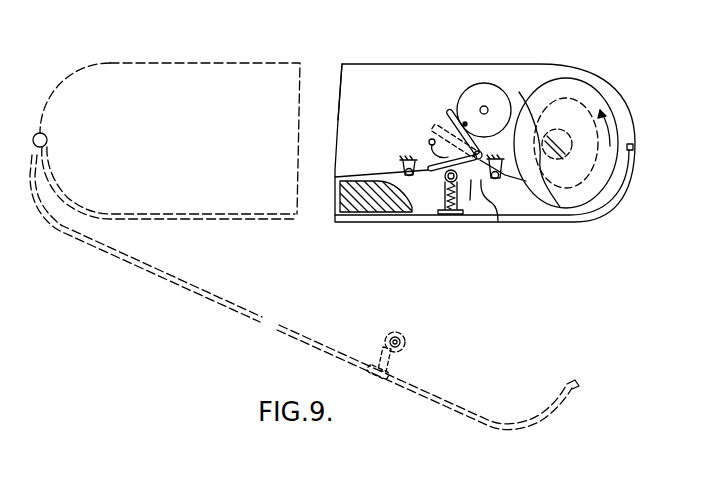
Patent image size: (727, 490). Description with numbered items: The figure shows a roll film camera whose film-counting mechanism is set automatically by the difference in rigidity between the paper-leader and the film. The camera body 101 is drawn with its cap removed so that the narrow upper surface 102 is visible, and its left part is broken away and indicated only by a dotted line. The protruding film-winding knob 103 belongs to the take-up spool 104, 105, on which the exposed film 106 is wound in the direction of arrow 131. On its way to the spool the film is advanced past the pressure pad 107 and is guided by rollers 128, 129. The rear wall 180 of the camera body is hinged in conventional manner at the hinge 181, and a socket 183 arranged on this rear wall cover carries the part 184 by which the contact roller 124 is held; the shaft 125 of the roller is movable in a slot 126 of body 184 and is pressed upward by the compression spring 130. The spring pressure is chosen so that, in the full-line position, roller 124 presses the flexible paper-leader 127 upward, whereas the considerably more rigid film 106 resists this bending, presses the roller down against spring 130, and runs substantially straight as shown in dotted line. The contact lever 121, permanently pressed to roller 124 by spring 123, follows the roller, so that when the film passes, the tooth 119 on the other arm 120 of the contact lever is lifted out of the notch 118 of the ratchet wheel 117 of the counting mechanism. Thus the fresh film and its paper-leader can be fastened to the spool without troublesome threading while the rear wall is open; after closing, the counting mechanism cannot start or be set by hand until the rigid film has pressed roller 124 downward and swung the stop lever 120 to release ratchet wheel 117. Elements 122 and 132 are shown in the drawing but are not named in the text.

The camera body 101 is at (437, 67).
The narrow upper surface 102 is at (372, 75).
The film-winding knob 103 is at (572, 92).
The spool 104 is at (547, 181).
The spool 105 is at (572, 117).
The exposed film 106 is at (471, 182).
The pressure pad 107 is at (345, 203).
The ratchet wheel 117 is at (495, 93).
The notch 118 is at (465, 124).
The tooth 119 is at (453, 125).
The arm 120 is at (455, 108).
The contact lever 121 is at (430, 156).
The pivot 122 is at (479, 155).
The spring 123 is at (430, 142).
The contact roller 124 is at (444, 181).
The shaft 125 is at (402, 335).
The slot 126 is at (447, 197).
The paper-leader 127 is at (498, 221).
The roller 128 is at (403, 172).
The roller 129 is at (498, 180).
The compression spring 130 is at (450, 203).
The arrow 131 is at (607, 122).
The stop tab 132 is at (634, 147).
The rear wall 180 is at (285, 332).
The hinge 181 is at (47, 140).
The socket 183 is at (392, 377).
The part 184 is at (382, 358).